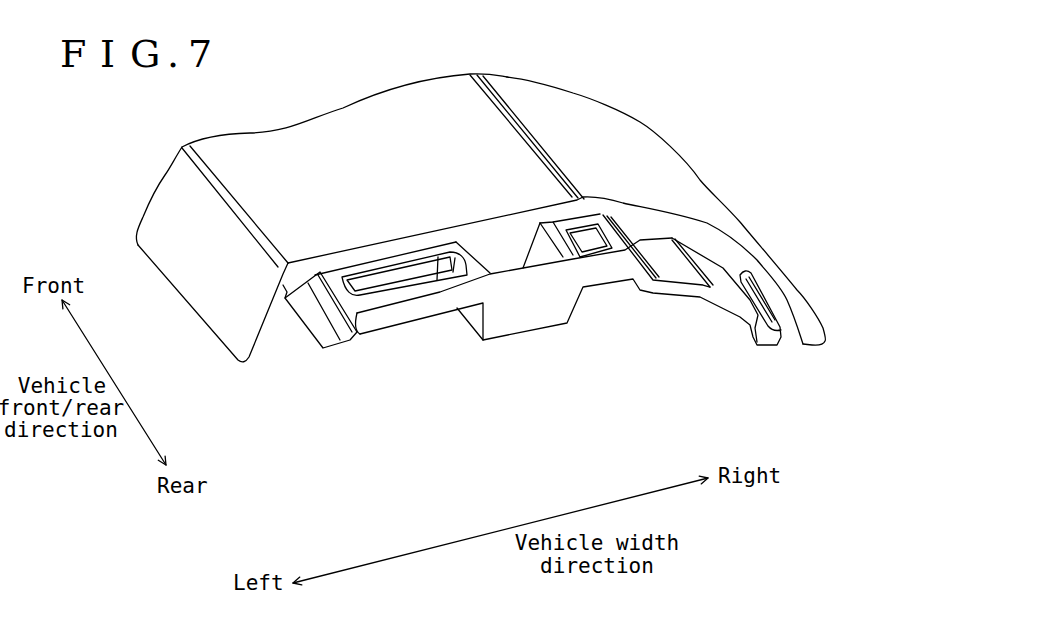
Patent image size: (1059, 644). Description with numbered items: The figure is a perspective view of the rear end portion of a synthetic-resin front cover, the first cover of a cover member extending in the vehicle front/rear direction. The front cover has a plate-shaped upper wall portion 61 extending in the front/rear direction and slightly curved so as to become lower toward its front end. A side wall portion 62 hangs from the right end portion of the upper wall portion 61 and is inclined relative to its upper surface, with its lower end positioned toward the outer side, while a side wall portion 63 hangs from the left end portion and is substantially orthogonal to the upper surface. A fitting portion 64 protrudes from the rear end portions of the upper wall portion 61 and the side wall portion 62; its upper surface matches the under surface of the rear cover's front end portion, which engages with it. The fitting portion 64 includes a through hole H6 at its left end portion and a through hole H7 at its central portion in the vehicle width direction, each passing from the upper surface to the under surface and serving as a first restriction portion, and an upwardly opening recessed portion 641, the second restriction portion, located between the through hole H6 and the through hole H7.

The upper wall portion 61 is at (417, 153).
The side wall portion 62 is at (655, 150).
The side wall portion 63 is at (220, 283).
The fitting portion 64 is at (543, 300).
The recessed portion 641 is at (515, 262).
The through hole H6 is at (420, 280).
The through hole H7 is at (600, 228).